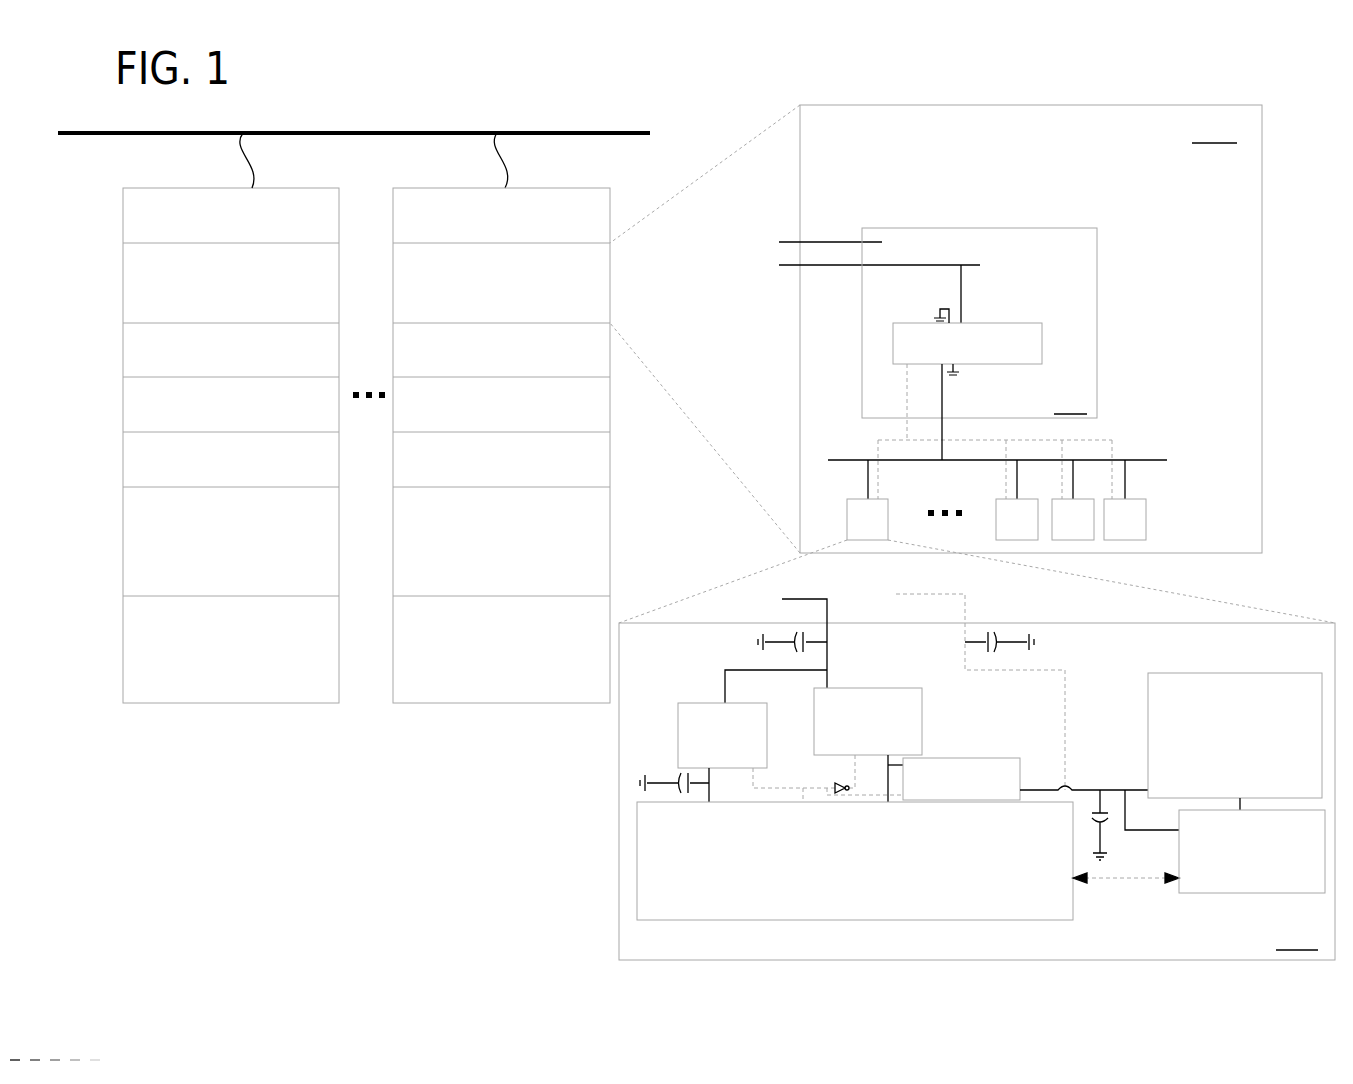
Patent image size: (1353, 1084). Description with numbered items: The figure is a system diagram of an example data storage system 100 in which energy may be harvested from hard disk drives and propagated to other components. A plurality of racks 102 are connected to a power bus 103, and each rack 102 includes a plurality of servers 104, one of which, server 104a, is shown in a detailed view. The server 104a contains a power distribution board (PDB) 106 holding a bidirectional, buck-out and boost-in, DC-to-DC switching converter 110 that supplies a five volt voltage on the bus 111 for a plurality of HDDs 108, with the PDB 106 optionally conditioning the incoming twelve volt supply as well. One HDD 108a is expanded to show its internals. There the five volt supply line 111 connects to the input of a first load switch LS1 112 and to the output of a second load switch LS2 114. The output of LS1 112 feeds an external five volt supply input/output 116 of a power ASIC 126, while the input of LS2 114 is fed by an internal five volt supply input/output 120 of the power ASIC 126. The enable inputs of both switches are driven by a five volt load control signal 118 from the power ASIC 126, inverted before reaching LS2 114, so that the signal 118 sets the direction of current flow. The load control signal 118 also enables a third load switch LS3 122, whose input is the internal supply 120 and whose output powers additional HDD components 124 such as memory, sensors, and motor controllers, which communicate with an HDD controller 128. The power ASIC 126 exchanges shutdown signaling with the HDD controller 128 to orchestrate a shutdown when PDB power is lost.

The data storage system 100 is at (1296, 64).
The rack 102 is at (729, 532).
The power bus 103 is at (640, 131).
The server 104 is at (400, 181).
The server 104a is at (404, 266).
The power distribution board (PDB) 106 is at (979, 323).
The HDD 108 is at (1160, 489).
The HDD 108a is at (882, 499).
The bidirectional DC-to-DC switching converter 110 is at (1002, 322).
The 5 V supply line 111 is at (1150, 460).
The first load switch (LS1) 112 is at (686, 703).
The second load switch (LS2) 114 is at (908, 688).
The external 5 V supply input/output 116 is at (684, 887).
The 5 V load control signal 118 is at (808, 861).
The internal 5 V supply input/output 120 is at (872, 885).
The third load switch (LS3) 122 is at (972, 758).
The additional HDD components 124 is at (1225, 672).
The power ASIC 126 is at (1027, 914).
The HDD controller 128 is at (1236, 889).